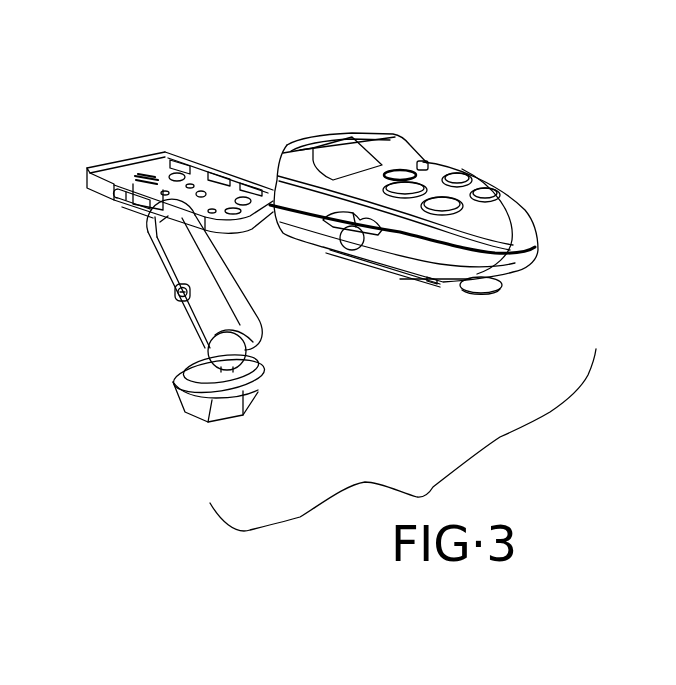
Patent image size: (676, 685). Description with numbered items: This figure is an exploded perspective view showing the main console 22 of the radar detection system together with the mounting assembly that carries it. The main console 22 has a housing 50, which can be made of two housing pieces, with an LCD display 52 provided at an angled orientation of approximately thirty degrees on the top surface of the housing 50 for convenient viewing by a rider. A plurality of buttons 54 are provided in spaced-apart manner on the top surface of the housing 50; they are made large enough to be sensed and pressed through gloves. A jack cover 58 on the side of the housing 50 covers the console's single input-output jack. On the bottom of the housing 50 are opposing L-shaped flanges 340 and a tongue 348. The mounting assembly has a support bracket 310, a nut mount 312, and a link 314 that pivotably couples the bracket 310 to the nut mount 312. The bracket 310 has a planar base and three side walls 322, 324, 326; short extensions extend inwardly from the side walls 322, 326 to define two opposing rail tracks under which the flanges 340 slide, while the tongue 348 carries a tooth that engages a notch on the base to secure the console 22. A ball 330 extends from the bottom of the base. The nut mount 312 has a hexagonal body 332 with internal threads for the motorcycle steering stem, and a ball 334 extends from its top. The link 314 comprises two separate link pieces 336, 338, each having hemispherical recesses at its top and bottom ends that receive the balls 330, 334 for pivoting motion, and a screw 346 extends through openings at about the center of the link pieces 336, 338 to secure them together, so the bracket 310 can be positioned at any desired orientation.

The main console 22 is at (378, 100).
The housing 50 is at (518, 225).
The LCD display 52 is at (404, 150).
The buttons 54 is at (489, 195).
The jack cover 58 is at (352, 250).
The L-shaped flanges 340 is at (397, 282).
The tongue 348 is at (485, 297).
The support bracket 310 is at (140, 150).
The nut mount 312 is at (175, 400).
The link 314 is at (156, 273).
The side wall 322 is at (200, 162).
The side wall 324 is at (115, 163).
The side wall 326 is at (95, 190).
The ball 330 is at (203, 222).
The hexagonal body 332 is at (228, 415).
The ball 334 is at (250, 347).
The link piece 336 is at (183, 310).
The link piece 338 is at (243, 293).
The screw 346 is at (180, 289).